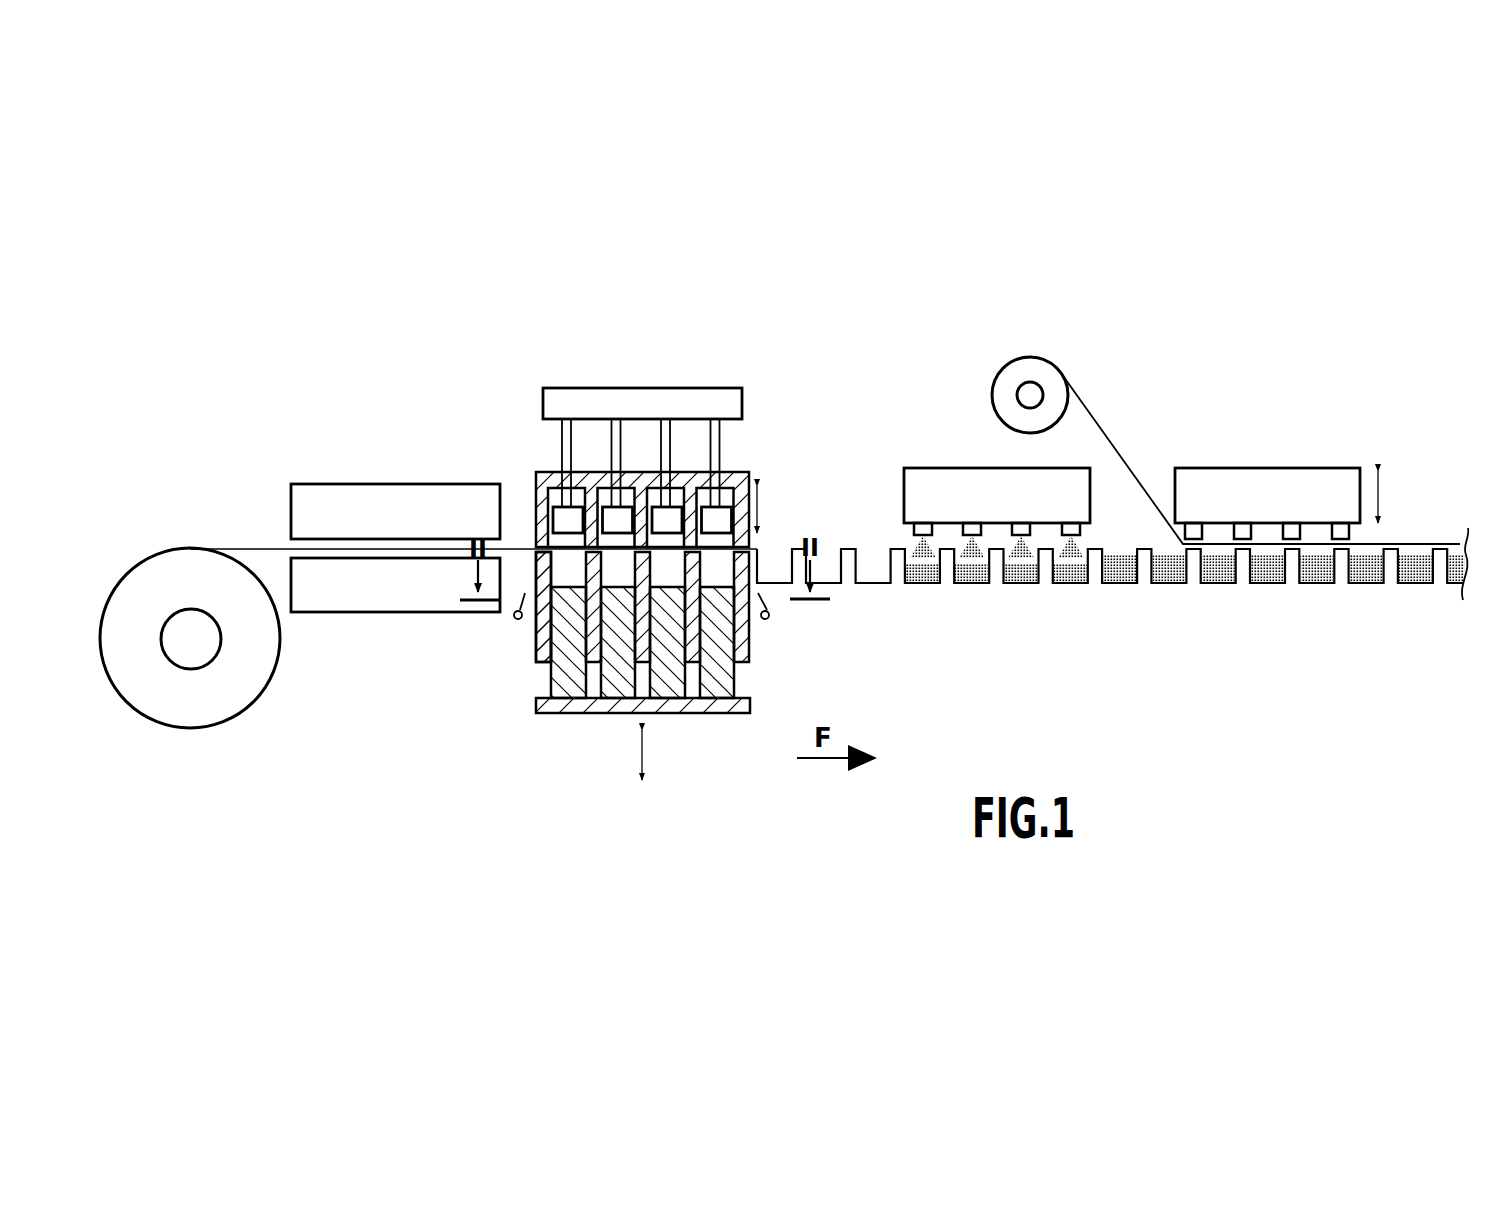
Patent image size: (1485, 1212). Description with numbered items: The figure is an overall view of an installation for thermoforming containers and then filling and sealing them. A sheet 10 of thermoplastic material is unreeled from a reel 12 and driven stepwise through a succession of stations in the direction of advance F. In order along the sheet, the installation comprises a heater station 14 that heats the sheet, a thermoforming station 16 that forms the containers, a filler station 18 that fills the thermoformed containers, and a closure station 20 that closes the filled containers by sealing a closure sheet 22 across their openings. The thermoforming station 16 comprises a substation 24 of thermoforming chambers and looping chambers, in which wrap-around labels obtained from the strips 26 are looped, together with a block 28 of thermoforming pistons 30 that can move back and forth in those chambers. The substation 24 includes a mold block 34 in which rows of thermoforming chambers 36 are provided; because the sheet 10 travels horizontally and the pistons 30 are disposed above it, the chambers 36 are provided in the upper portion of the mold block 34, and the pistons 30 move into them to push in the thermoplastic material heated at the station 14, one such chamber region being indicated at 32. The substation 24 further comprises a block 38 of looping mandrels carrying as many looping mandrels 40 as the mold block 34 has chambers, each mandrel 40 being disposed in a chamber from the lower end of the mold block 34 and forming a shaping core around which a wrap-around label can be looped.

The sheet 10 is at (248, 548).
The reel 12 is at (217, 700).
The heater station 14 is at (362, 482).
The thermoforming station 16 is at (686, 376).
The filler station 18 is at (962, 465).
The closure station 20 is at (1255, 462).
The closure sheet 22 is at (1106, 448).
The substation 24 is at (569, 720).
The strips 26 is at (513, 620).
The block of thermoforming pistons 28 is at (532, 472).
The thermoforming pistons 30 is at (712, 516).
The forming cavity 32 is at (712, 577).
The mold block 34 is at (547, 663).
The thermoforming chambers 36 is at (558, 572).
The block of looping mandrels 38 is at (737, 709).
The looping mandrels 40 is at (668, 683).